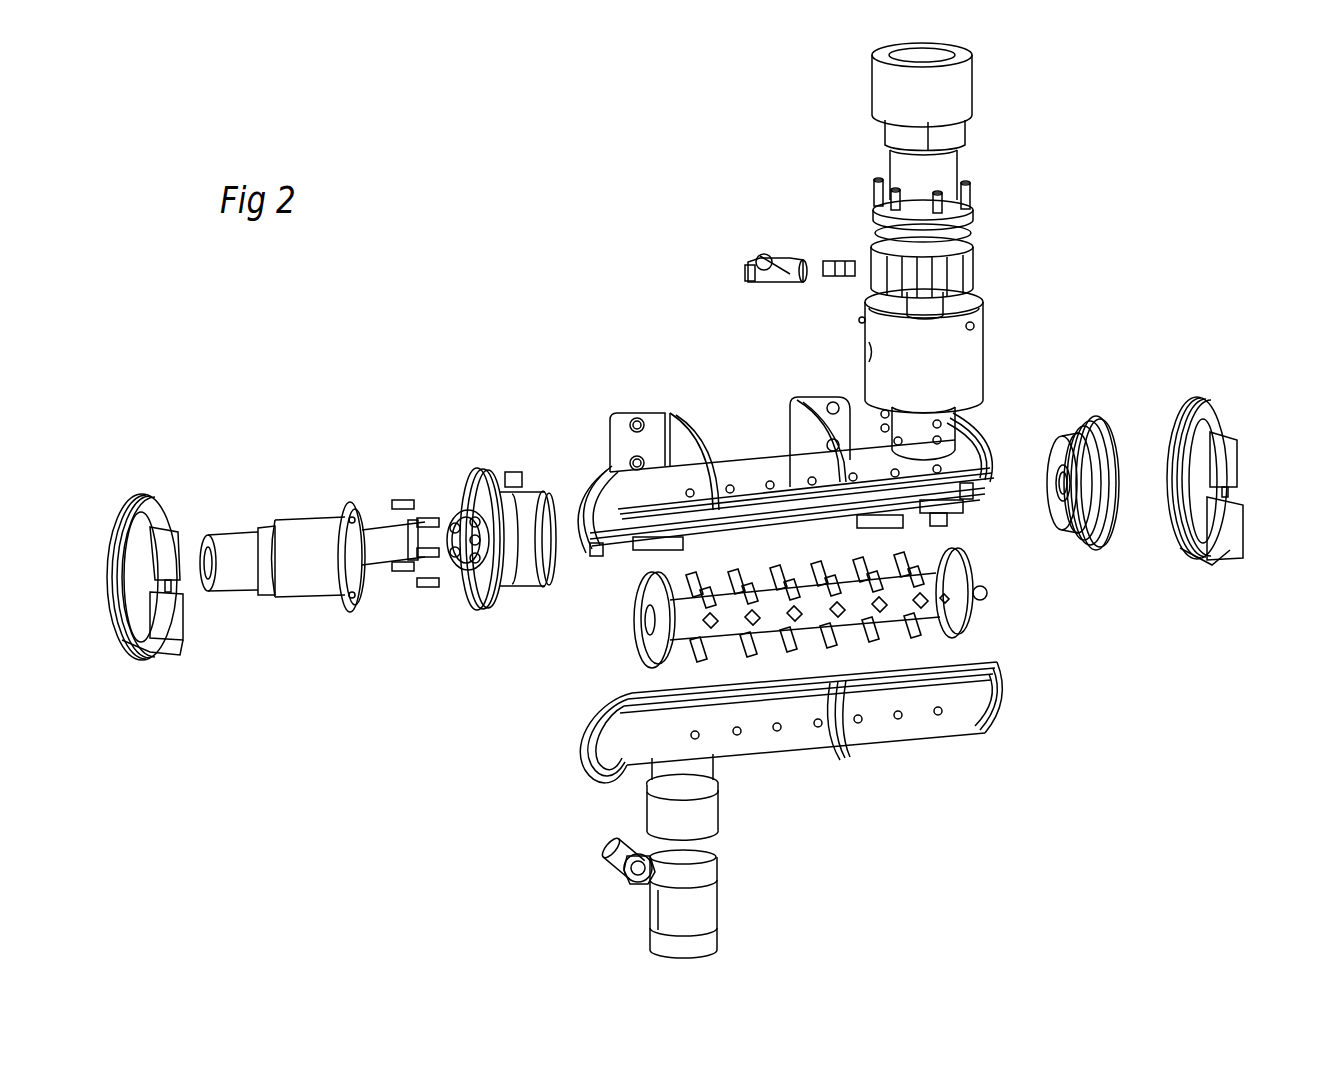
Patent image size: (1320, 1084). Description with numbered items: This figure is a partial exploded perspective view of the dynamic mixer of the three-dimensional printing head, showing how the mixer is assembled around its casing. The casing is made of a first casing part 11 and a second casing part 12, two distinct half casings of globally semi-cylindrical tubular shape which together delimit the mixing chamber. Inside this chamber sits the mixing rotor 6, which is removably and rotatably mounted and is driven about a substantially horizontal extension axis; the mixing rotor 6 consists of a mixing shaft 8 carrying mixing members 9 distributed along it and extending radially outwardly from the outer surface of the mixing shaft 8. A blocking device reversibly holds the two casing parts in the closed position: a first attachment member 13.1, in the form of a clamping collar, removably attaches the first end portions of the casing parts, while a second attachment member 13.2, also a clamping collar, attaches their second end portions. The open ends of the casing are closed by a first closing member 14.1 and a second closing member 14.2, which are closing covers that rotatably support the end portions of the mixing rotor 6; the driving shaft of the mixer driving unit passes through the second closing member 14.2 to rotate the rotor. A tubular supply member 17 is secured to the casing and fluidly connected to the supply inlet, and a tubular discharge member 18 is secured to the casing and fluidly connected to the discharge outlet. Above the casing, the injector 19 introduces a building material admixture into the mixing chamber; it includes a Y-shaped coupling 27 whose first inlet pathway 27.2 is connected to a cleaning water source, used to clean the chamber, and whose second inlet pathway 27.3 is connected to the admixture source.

The mixing rotor 6 is at (1006, 528).
The mixing shaft 8 is at (824, 619).
The mixing members 9 is at (880, 621).
The first casing part 11 is at (791, 753).
The second casing part 12 is at (786, 470).
The first attachment member 13.1 is at (1231, 448).
The second attachment member 13.2 is at (159, 542).
The first closing member 14.1 is at (1110, 440).
The second closing member 14.2 is at (378, 503).
The tubular supply member 17 is at (985, 408).
The tubular discharge member 18 is at (727, 801).
The injector 19 is at (969, 228).
The Y-shaped coupling 27 is at (747, 219).
The first inlet pathway 27.2 is at (739, 234).
The second inlet pathway 27.3 is at (697, 290).